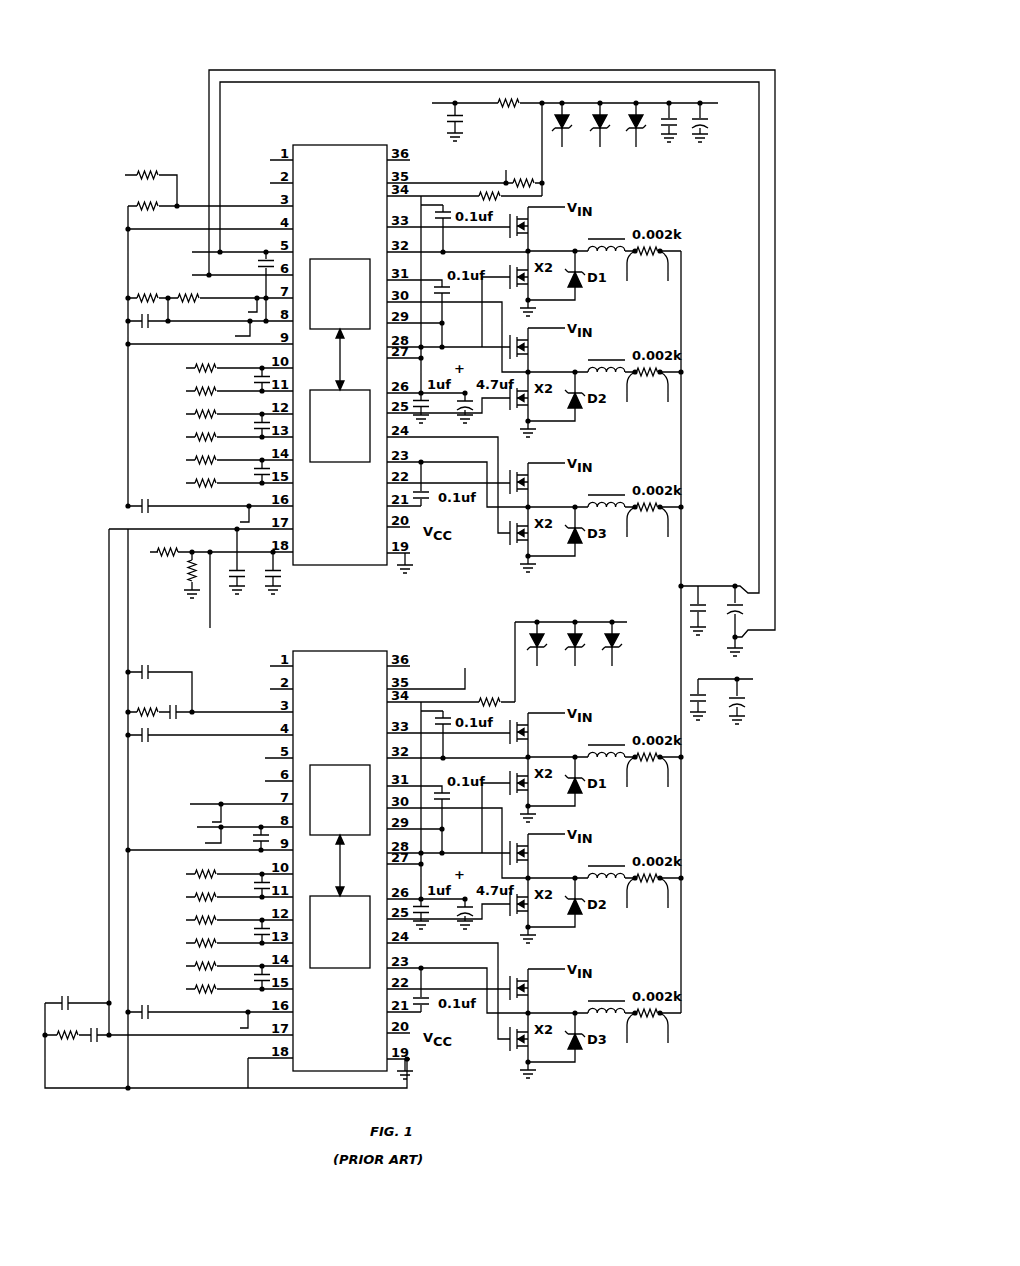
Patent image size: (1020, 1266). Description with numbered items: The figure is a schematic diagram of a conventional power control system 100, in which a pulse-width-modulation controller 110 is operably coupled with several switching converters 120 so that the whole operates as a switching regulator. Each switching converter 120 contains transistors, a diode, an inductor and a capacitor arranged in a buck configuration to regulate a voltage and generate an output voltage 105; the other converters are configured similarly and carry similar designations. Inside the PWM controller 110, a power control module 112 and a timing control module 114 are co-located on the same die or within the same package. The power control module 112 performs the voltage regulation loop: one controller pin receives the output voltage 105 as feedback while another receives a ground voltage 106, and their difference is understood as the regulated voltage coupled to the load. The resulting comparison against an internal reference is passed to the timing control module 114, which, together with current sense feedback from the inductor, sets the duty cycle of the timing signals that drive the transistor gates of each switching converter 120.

The power control system 100 is at (427, 549).
The pulse-width-modulation (PWM) controller 110 is at (340, 145).
The power control module 112 is at (345, 259).
The timing control module 114 is at (340, 464).
The switching converter 120 is at (633, 224).
The output voltage 105 is at (712, 585).
The ground voltage 106 is at (773, 598).